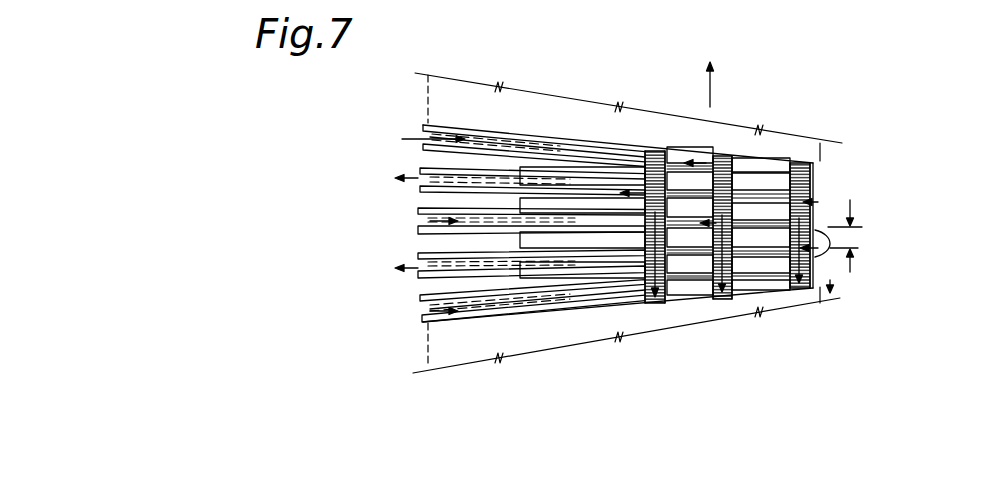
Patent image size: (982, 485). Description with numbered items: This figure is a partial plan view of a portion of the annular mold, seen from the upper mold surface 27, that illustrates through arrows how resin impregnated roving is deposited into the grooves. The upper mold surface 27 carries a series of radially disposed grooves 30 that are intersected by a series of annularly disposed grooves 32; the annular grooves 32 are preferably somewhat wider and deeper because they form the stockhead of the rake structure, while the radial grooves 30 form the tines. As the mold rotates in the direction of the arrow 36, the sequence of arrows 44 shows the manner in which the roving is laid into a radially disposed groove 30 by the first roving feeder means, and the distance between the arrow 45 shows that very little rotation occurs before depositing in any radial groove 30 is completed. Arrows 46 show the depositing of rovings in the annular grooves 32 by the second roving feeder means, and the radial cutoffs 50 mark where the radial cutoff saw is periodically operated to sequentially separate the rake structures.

The upper mold surface 27 is at (500, 243).
The radially disposed grooves 30 is at (522, 186).
The annularly disposed grooves 32 is at (670, 272).
The arrow 36 is at (712, 106).
The arrows 44 is at (440, 139).
The arrow 45 is at (856, 204).
The arrows 46 is at (648, 258).
The radial cutoffs 50 is at (582, 168).